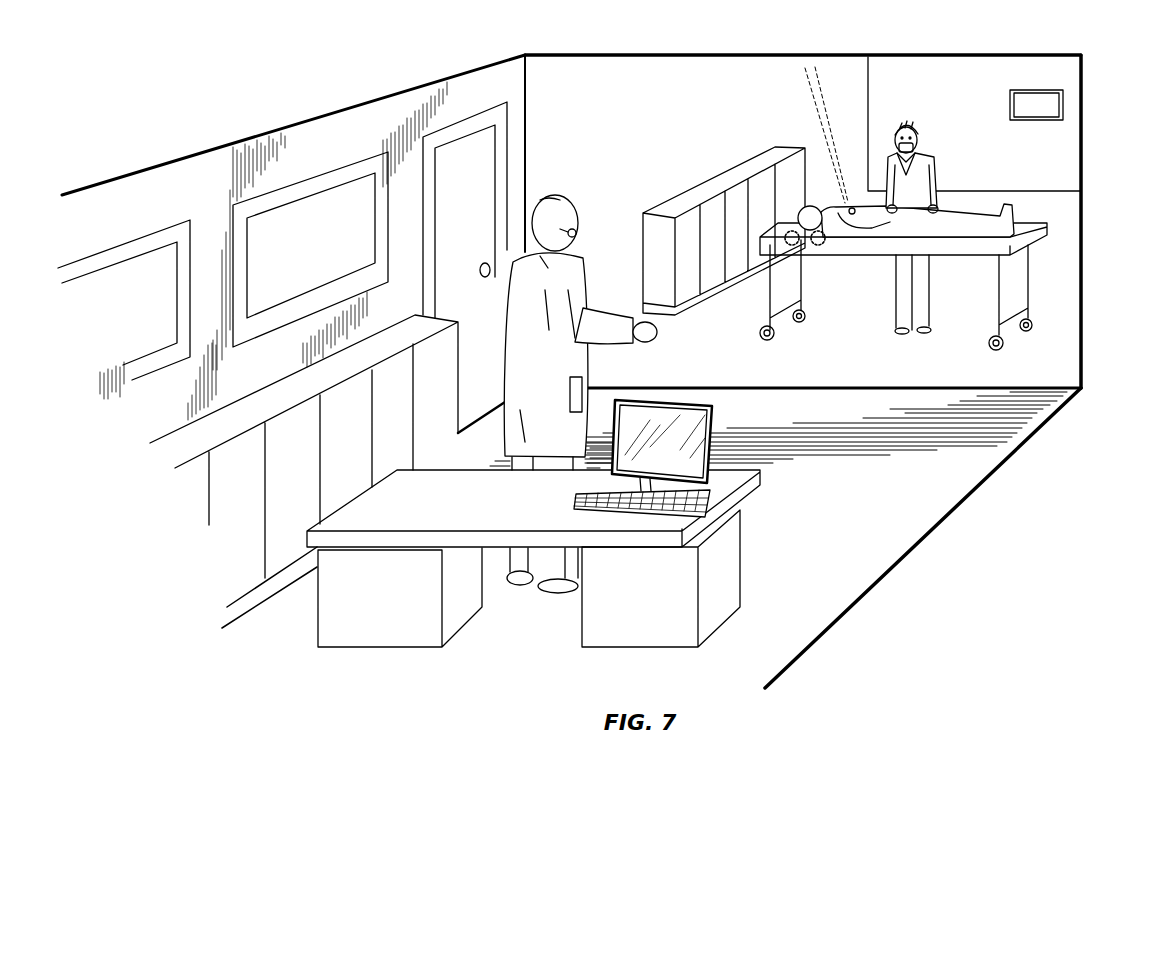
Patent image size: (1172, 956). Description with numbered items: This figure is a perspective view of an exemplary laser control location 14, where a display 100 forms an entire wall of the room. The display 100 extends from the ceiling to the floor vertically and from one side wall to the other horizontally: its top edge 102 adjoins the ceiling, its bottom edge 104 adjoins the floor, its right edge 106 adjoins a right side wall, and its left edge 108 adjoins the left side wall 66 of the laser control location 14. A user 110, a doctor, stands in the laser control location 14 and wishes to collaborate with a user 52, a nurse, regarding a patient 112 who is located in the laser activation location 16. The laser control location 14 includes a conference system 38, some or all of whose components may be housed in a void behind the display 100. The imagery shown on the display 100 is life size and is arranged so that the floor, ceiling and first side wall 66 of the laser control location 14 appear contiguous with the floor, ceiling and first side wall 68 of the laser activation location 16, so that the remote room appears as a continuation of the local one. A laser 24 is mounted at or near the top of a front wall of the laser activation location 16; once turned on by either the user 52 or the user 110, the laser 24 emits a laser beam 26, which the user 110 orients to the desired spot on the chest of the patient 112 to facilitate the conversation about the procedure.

The display 100 is at (1083, 288).
The top edge 102 is at (664, 64).
The bottom edge 104 is at (882, 380).
The right edge 106 is at (1077, 325).
The left edge 108 is at (535, 121).
The left side wall 66 is at (318, 151).
The first side wall 68 is at (678, 169).
The laser activation location 16 is at (1017, 149).
The laser control location 14 is at (878, 477).
The user 110 is at (525, 357).
The patient 112 is at (972, 232).
The conference system 38 is at (797, 245).
The laser beam 26 is at (856, 198).
The laser 24 is at (806, 64).
The user 52 is at (937, 165).